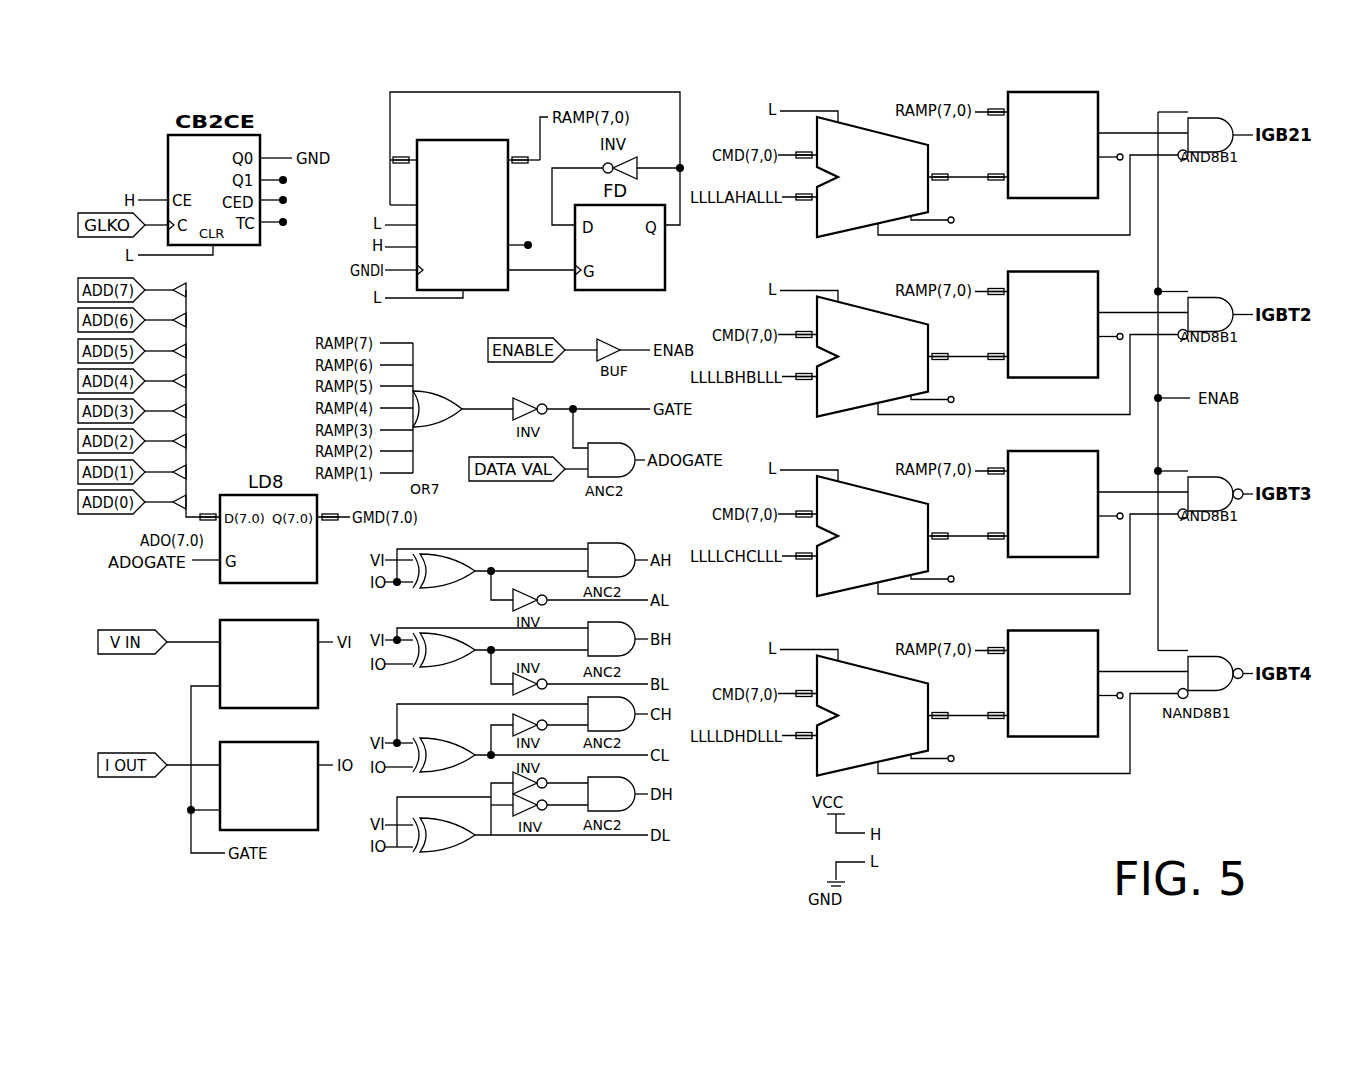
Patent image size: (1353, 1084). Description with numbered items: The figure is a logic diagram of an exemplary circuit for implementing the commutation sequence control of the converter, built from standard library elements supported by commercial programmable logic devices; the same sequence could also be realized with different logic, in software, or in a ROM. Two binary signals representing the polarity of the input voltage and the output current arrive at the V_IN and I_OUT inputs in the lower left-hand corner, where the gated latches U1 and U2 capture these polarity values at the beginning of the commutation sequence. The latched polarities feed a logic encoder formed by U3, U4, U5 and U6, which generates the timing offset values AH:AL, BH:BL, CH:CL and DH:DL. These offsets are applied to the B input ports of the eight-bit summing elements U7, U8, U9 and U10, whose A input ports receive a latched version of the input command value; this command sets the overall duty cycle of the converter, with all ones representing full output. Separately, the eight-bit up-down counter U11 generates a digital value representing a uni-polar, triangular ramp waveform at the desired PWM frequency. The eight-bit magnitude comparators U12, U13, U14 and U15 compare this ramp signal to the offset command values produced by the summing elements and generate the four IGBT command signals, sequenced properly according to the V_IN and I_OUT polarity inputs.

The gated latch U1 is at (269, 648).
The gated latch U2 is at (269, 770).
The logic encoder element U3 is at (436, 583).
The logic encoder element U4 is at (436, 662).
The logic encoder element U5 is at (436, 766).
The logic encoder element U6 is at (436, 846).
The 8-bit summing element U7 is at (872, 158).
The 8-bit summing element U8 is at (872, 338).
The 8-bit summing element U9 is at (872, 517).
The 8-bit summing element U10 is at (872, 697).
The 8-bit up-down counter U11 is at (463, 203).
The 8-bit magnitude comparator U12 is at (1053, 134).
The 8-bit magnitude comparator U13 is at (1053, 314).
The 8-bit magnitude comparator U14 is at (1053, 493).
The 8-bit magnitude comparator U15 is at (1053, 673).